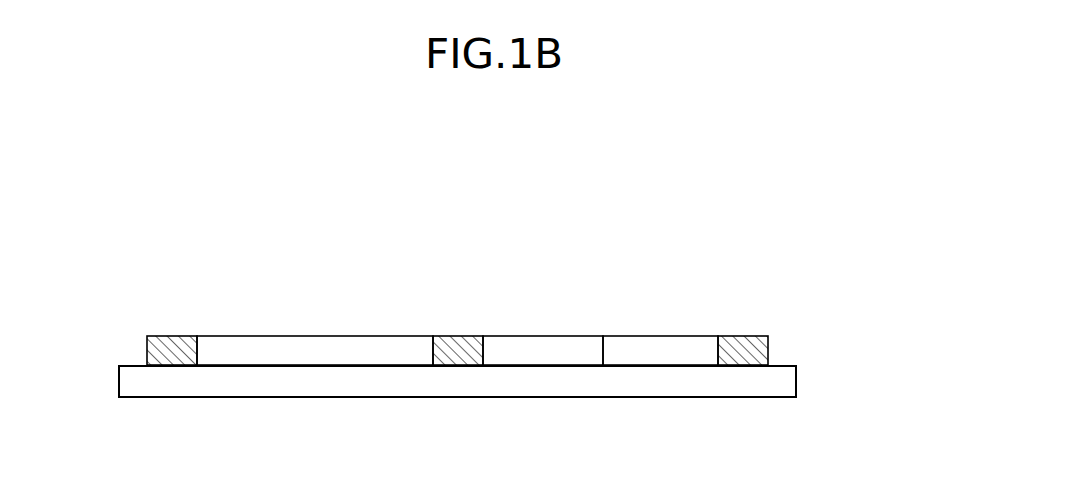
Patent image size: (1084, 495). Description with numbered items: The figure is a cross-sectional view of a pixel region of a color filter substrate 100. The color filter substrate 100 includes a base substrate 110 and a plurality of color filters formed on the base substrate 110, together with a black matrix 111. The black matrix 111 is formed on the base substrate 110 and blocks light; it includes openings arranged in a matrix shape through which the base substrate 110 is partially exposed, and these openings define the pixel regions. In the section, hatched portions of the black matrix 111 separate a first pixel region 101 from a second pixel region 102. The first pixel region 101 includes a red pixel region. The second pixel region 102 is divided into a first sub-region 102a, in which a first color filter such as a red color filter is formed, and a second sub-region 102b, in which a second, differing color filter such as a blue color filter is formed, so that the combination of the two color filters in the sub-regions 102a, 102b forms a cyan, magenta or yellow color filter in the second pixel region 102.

The color filter substrate 100 is at (457, 316).
The first pixel region 101 is at (318, 316).
The second pixel region 102 is at (600, 276).
The first sub-region 102a is at (553, 316).
The second sub-region 102b is at (660, 298).
The base substrate 110 is at (170, 397).
The black matrix 111 is at (168, 333).